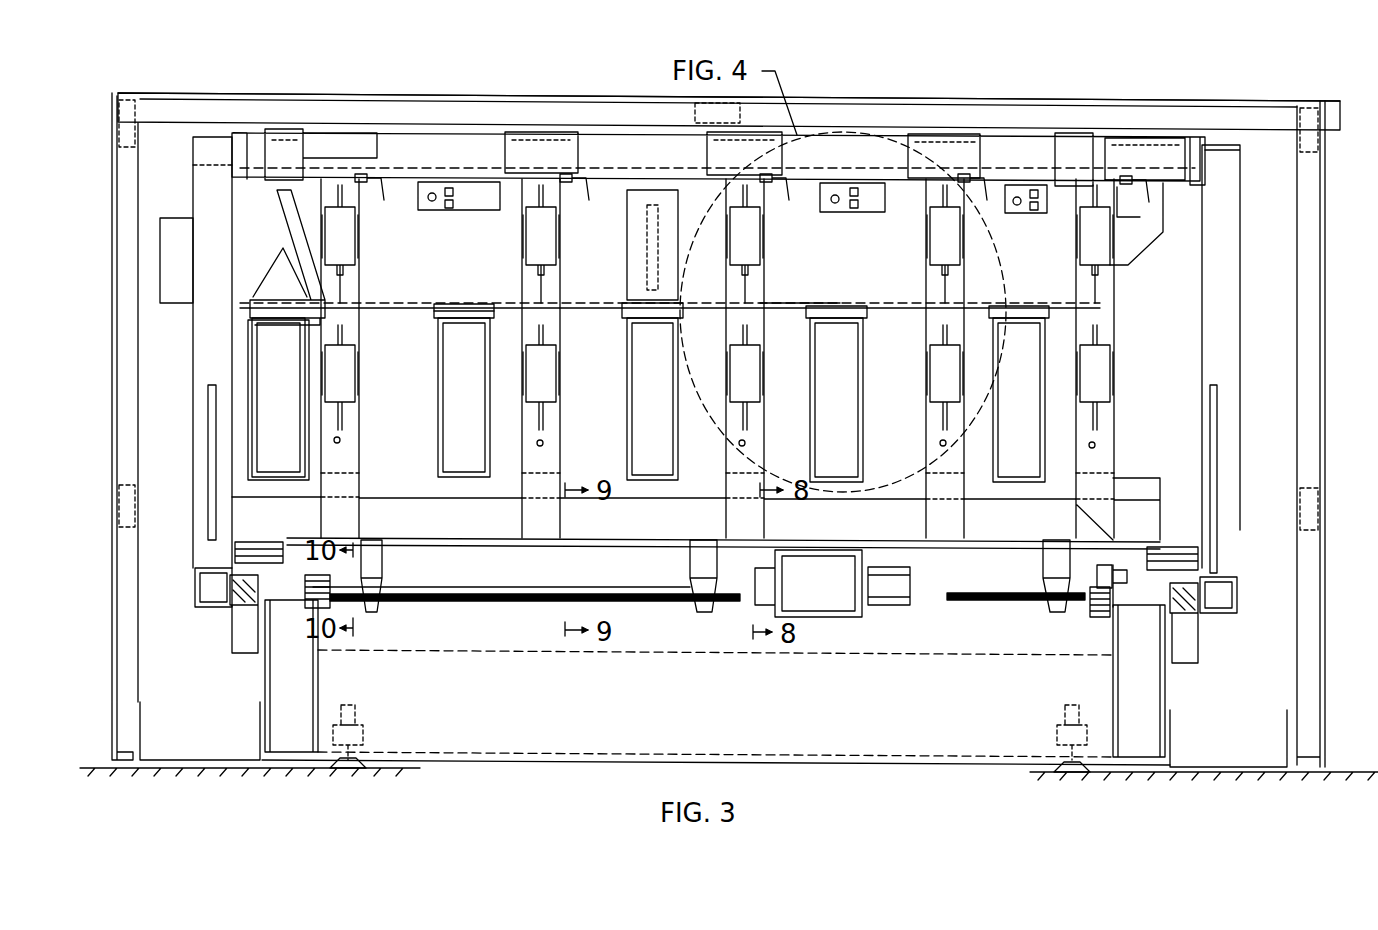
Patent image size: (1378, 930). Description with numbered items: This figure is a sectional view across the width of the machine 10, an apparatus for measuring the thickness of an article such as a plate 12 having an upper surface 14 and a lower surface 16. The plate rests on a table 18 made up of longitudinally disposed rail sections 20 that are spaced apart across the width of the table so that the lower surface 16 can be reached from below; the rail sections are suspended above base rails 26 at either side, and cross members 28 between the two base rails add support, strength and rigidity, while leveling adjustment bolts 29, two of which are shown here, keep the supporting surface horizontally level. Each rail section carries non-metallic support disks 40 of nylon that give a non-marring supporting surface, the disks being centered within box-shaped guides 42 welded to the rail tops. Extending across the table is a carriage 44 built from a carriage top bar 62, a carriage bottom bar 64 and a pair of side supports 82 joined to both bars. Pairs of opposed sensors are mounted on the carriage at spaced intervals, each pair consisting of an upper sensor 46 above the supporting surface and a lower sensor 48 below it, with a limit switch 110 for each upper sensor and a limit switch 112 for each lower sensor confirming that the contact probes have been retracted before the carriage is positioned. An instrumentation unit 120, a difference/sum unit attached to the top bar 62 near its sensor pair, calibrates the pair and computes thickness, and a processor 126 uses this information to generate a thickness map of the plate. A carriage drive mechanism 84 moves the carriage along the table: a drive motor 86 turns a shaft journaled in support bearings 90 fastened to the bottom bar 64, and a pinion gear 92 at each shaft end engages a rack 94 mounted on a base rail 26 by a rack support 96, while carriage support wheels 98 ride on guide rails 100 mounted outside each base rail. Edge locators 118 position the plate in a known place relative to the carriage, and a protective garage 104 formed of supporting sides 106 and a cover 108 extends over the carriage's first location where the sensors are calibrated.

The machine 10 is at (548, 73).
The plate 12 is at (790, 305).
The upper surface 14 is at (915, 303).
The lower surface 16 is at (878, 310).
The table 18 is at (250, 440).
The rail sections 20 is at (252, 342).
The base rails 26 is at (318, 665).
The cross members 28 is at (824, 714).
The leveling adjustment bolts 29 is at (362, 742).
The non-metallic support disks 40 is at (462, 303).
The guides 42 is at (438, 316).
The carriage 44 is at (194, 169).
The upper sensor 46 is at (348, 243).
The lower sensor 48 is at (348, 368).
The carriage top bar 62 is at (470, 155).
The carriage bottom bar 64 is at (480, 540).
The side supports 82 is at (208, 415).
The carriage drive mechanism 84 is at (850, 617).
The drive motor 86 is at (905, 572).
The support bearings 90 is at (379, 610).
The pinion gear 92 is at (1096, 617).
The rack 94 is at (1104, 575).
The rack support 96 is at (308, 562).
The carriage support wheels 98 is at (256, 582).
The guide rails 100 is at (248, 624).
The protective garage 104 is at (146, 91).
The supporting sides 106 is at (116, 350).
The cover 108 is at (357, 95).
The limit switch 110 is at (382, 178).
The limit switch 112 is at (341, 442).
The edge locators 118 is at (283, 222).
The instrumentation unit 120 is at (462, 212).
The processor 126 is at (160, 250).